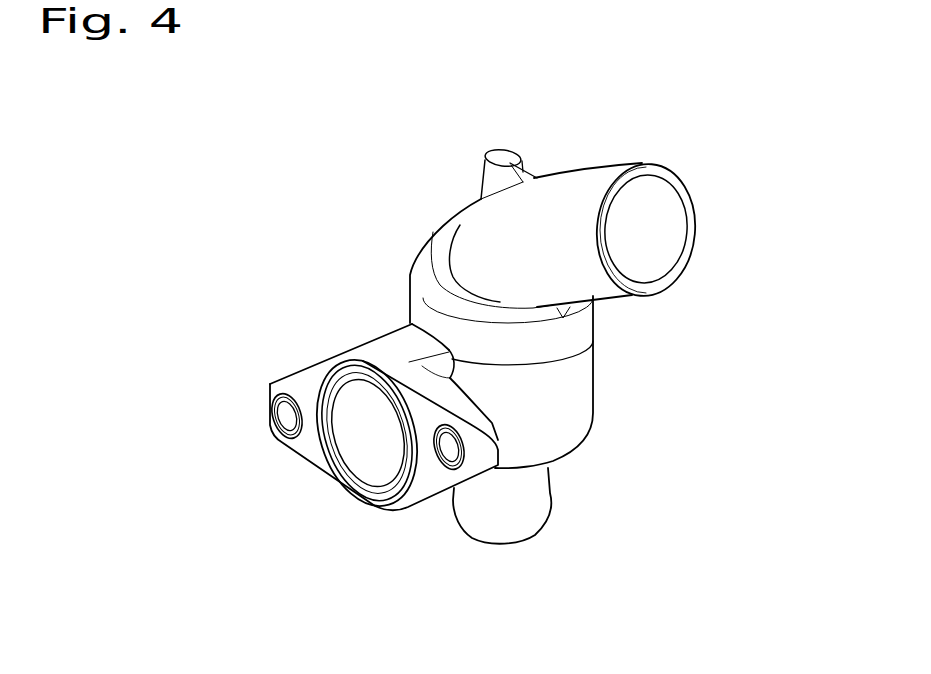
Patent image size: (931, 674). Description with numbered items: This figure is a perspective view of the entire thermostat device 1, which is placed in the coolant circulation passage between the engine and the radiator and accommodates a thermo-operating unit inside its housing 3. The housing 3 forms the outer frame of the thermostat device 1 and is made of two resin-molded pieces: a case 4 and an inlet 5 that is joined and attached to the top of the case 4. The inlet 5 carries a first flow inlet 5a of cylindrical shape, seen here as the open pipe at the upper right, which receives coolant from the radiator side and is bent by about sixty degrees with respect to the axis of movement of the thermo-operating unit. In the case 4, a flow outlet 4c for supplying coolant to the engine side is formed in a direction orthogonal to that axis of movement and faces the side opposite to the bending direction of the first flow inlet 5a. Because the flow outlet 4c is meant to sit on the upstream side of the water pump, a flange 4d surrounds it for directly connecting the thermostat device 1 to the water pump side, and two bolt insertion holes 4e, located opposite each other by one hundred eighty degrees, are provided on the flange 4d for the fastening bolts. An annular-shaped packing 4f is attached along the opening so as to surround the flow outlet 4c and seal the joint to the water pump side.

The thermostat device 1 is at (489, 349).
The housing 3 is at (489, 380).
The case 4 is at (403, 454).
The flow outlet 4c is at (363, 448).
The flange 4d is at (313, 445).
The bolt insertion holes 4e is at (288, 411).
The annular-shaped packing 4f is at (370, 502).
The inlet 5 is at (621, 271).
The first flow inlet 5a is at (665, 240).